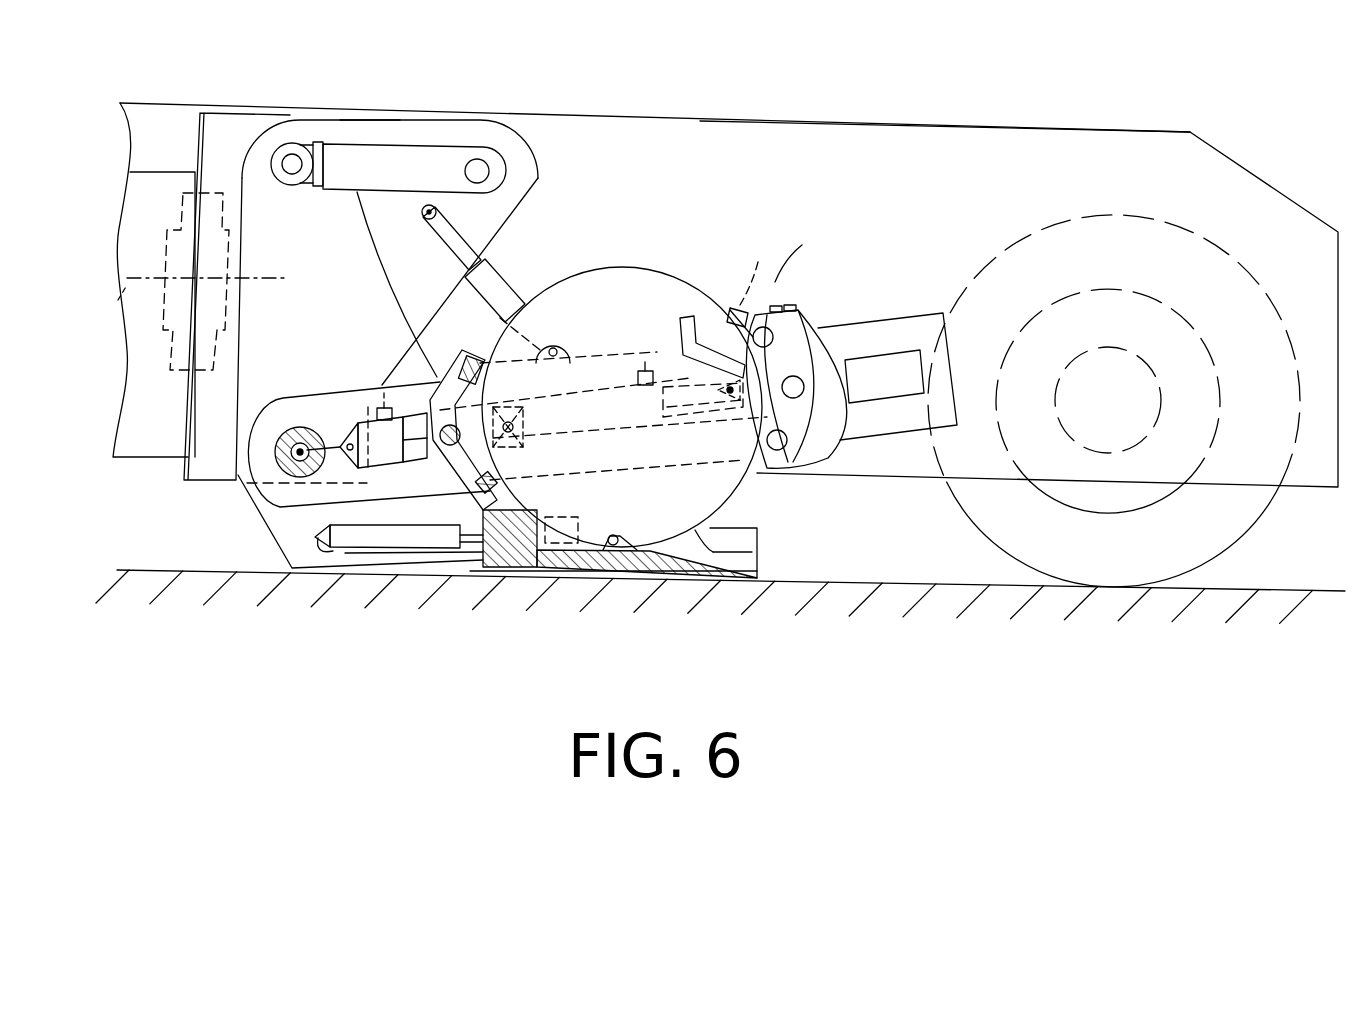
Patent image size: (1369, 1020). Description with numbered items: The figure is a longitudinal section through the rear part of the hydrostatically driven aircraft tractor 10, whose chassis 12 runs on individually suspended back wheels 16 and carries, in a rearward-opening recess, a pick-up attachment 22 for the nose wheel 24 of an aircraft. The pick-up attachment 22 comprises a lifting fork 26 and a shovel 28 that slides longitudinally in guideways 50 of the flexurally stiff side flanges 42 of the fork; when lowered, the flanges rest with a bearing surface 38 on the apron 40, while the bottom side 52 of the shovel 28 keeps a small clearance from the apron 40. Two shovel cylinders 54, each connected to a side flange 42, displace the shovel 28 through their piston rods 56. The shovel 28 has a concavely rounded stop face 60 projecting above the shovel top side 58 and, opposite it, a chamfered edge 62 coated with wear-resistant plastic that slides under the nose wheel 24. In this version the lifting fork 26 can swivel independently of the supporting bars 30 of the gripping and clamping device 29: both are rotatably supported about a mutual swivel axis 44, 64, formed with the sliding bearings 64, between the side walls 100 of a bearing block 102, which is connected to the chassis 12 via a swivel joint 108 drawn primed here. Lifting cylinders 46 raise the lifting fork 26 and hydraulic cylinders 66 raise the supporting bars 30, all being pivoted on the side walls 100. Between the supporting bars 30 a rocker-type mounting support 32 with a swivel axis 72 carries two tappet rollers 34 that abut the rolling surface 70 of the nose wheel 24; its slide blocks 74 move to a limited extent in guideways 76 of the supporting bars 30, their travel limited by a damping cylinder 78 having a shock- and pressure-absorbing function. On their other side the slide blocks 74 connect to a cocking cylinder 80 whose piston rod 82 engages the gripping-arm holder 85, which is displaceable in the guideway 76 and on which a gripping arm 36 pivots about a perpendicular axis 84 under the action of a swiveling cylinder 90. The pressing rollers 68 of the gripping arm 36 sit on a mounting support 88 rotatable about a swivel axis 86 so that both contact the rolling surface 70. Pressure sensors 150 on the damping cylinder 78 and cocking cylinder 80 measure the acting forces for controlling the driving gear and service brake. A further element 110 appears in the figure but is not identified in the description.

The aircraft tractor 10 is at (878, 117).
The chassis 12 is at (1057, 140).
The back wheels 16 is at (990, 532).
The pick-up attachment 22 is at (548, 163).
The nose wheel 24 is at (625, 270).
The lifting fork 26 is at (273, 192).
The shovel 28 is at (637, 567).
The gripping and clamping device 29 is at (775, 295).
The supporting bars 30 is at (905, 328).
The tappet-roller mounting support 32 is at (440, 380).
The tappet rollers 34 is at (465, 358).
The gripping arms 36 is at (832, 330).
The bearing surface 38 is at (690, 578).
The apron 40 is at (1250, 563).
The side flanges 42 is at (753, 527).
The swivel axis 44 is at (284, 408).
The lifting cylinders 46 is at (405, 162).
The guideways 50 is at (393, 556).
The bottom side 52 is at (537, 583).
The shovel cylinders 54 is at (317, 536).
The piston rods 56 is at (590, 540).
The shovel top side 58 is at (703, 545).
The stop face 60 is at (551, 532).
The chamfered edge 62 is at (753, 553).
The sliding bearings 64 is at (298, 438).
The hydraulic cylinders 66 is at (505, 290).
The pressing rollers 68 is at (815, 327).
The rolling surface 70 is at (681, 300).
The swivel axis 72 is at (488, 365).
The slide blocks 74 is at (420, 425).
The guideways 76 is at (417, 463).
The damping cylinder 78 is at (358, 425).
The cocking cylinder 80 is at (577, 410).
The piston rod 82 is at (663, 416).
The perpendicular axis 84 is at (790, 302).
The gripping-arm holder 85 is at (709, 312).
The swivel axis 86 is at (815, 377).
The mounting support 88 is at (848, 385).
The swiveling cylinder 90 is at (759, 281).
The side walls 100 is at (473, 137).
The bearing block 102 is at (366, 118).
The swivel joint 108 is at (150, 242).
The center line 110 is at (118, 307).
The pressure sensors 150 is at (384, 396).